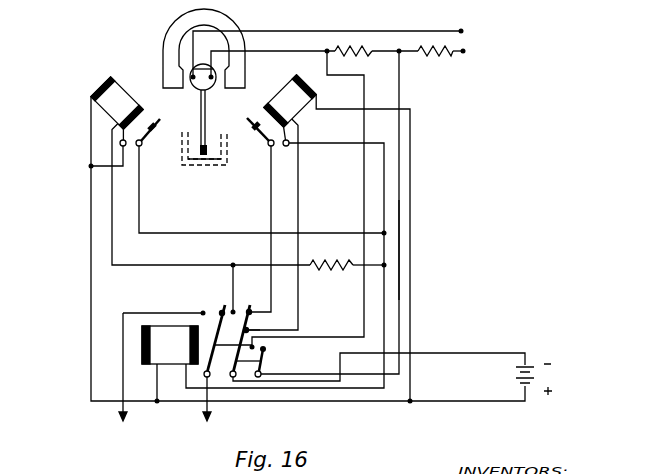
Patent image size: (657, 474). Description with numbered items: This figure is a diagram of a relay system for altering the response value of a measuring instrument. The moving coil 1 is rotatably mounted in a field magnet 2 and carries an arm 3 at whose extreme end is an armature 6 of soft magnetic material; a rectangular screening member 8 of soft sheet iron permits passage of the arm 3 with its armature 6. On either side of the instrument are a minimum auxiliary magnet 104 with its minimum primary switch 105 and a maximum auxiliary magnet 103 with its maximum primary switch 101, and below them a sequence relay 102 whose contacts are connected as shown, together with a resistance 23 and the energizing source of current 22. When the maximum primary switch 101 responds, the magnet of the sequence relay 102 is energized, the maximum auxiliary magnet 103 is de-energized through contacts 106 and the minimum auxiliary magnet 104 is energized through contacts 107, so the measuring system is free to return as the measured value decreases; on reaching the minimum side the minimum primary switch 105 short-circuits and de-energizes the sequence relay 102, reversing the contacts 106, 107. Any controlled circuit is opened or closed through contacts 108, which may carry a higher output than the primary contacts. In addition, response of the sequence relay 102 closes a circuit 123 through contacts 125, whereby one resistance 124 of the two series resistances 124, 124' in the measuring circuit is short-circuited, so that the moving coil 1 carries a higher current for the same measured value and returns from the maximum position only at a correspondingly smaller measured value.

The moving coil 1 is at (197, 84).
The field magnet 2 is at (168, 33).
The arm 3 is at (206, 113).
The armature 6 is at (201, 158).
The screening member 8 is at (220, 165).
The energizing source of current 22 is at (546, 380).
The resistance 23 is at (330, 269).
The maximum primary switch 101 is at (251, 113).
The sequence relay 102 is at (142, 352).
The maximum auxiliary magnet 103 is at (310, 101).
The minimum auxiliary magnet 104 is at (101, 84).
The minimum primary switch 105 is at (154, 114).
The contacts 106 is at (292, 330).
The contacts 107 is at (243, 312).
The contacts 108 is at (210, 312).
The circuit 123 is at (402, 294).
The resistance 124 is at (362, 30).
The resistance 124' is at (444, 68).
The contacts 125 is at (268, 350).